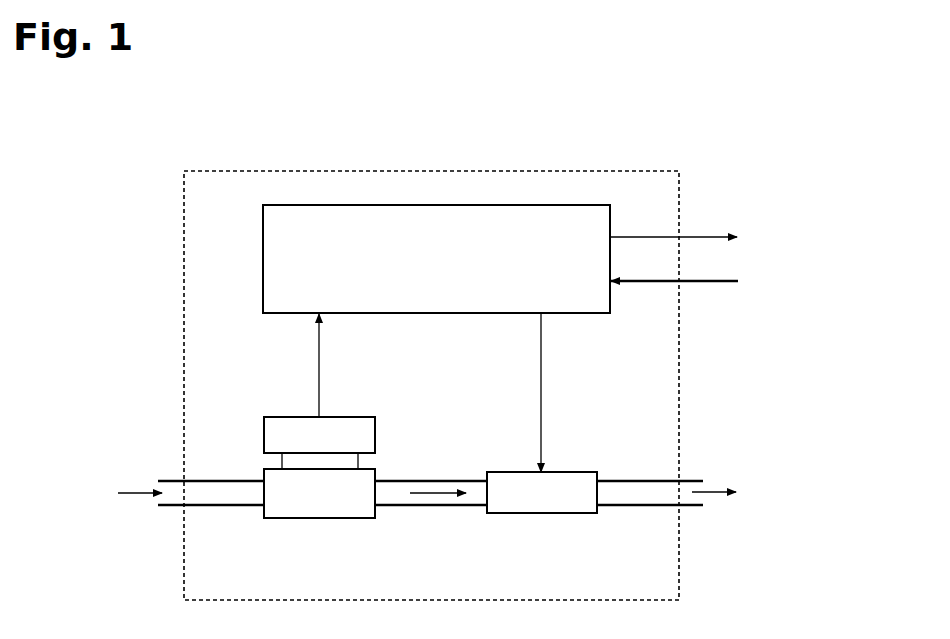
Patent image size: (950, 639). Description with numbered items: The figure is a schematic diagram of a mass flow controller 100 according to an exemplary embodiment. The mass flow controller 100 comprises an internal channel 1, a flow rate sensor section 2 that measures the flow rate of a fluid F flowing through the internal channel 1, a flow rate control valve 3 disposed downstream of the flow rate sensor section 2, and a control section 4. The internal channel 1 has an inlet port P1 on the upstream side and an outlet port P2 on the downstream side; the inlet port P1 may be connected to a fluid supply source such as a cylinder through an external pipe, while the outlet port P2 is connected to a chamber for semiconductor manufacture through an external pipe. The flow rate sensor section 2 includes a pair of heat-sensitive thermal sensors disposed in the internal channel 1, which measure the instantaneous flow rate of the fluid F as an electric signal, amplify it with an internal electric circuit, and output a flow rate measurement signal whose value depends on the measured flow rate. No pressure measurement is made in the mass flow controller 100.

The mass flow controller 100 is at (184, 384).
The control section 4 is at (263, 259).
The internal channel 1 is at (425, 507).
The flow rate sensor section 2 is at (320, 518).
The flow rate control valve 3 is at (541, 513).
The fluid F is at (138, 488).
The inlet port P1 is at (160, 506).
The outlet port P2 is at (697, 505).